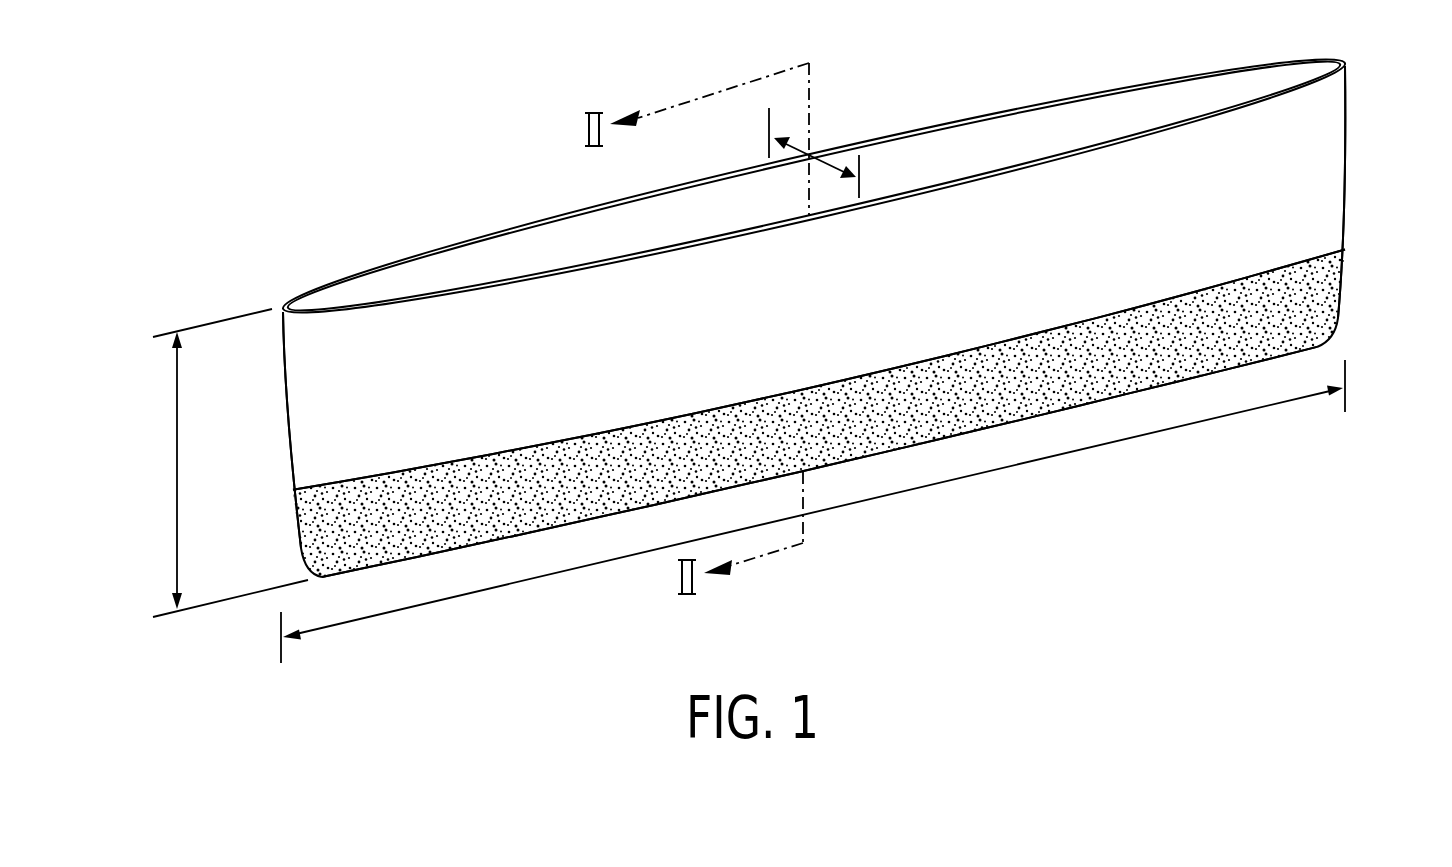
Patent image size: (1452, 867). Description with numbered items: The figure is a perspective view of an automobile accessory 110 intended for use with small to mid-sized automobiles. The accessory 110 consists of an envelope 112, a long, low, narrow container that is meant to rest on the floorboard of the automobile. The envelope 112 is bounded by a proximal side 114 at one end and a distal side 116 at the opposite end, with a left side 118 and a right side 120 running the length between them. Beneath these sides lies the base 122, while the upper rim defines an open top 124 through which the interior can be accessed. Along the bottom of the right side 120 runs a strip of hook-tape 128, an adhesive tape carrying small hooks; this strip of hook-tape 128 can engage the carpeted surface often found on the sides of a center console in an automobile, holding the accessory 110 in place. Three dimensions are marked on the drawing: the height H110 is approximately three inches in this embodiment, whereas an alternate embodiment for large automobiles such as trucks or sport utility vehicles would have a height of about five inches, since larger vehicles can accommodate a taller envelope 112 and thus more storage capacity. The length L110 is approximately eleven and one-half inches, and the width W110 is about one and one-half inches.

The automobile accessory 110 is at (491, 139).
The envelope 112 is at (350, 273).
The proximal side 114 is at (283, 390).
The distal side 116 is at (1347, 120).
The left side 118 is at (978, 115).
The right side 120 is at (1325, 197).
The base 122 is at (1333, 338).
The open top 124 is at (1063, 122).
The hook-tape 128 is at (1320, 307).
The height dimension H110 is at (176, 471).
The length dimension L110 is at (886, 495).
The width dimension W110 is at (831, 160).